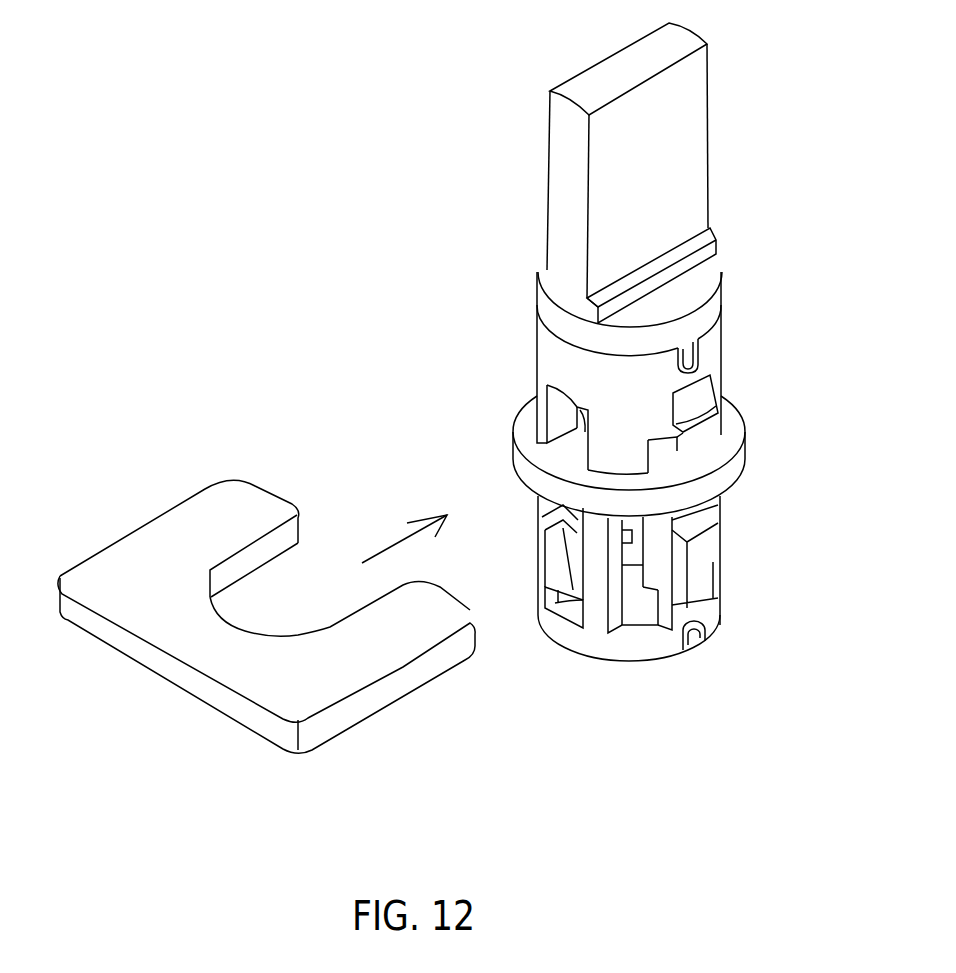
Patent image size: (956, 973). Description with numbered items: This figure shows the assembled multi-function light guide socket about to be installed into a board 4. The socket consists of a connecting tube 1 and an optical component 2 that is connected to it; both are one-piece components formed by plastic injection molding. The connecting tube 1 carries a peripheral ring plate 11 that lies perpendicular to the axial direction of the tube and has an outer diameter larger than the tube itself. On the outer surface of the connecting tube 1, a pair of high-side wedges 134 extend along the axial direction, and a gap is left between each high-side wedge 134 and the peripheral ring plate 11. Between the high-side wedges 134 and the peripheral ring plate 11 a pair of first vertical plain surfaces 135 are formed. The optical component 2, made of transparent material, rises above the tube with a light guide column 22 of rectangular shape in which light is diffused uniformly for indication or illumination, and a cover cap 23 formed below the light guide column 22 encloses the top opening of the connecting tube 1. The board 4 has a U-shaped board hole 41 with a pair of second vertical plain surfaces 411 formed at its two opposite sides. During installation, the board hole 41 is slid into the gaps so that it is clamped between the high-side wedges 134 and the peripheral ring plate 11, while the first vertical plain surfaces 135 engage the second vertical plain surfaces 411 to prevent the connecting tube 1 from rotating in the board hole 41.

The connecting tube 1 is at (505, 347).
The peripheral ring plate 11 is at (516, 452).
The high-side wedge 134 is at (707, 402).
The first vertical plain surface 135 is at (673, 447).
The optical component 2 is at (520, 132).
The light guide column 22 is at (690, 118).
The cover cap 23 is at (707, 283).
The board 4 is at (190, 535).
The board hole 41 is at (328, 562).
The second vertical plain surface 411 is at (257, 558).